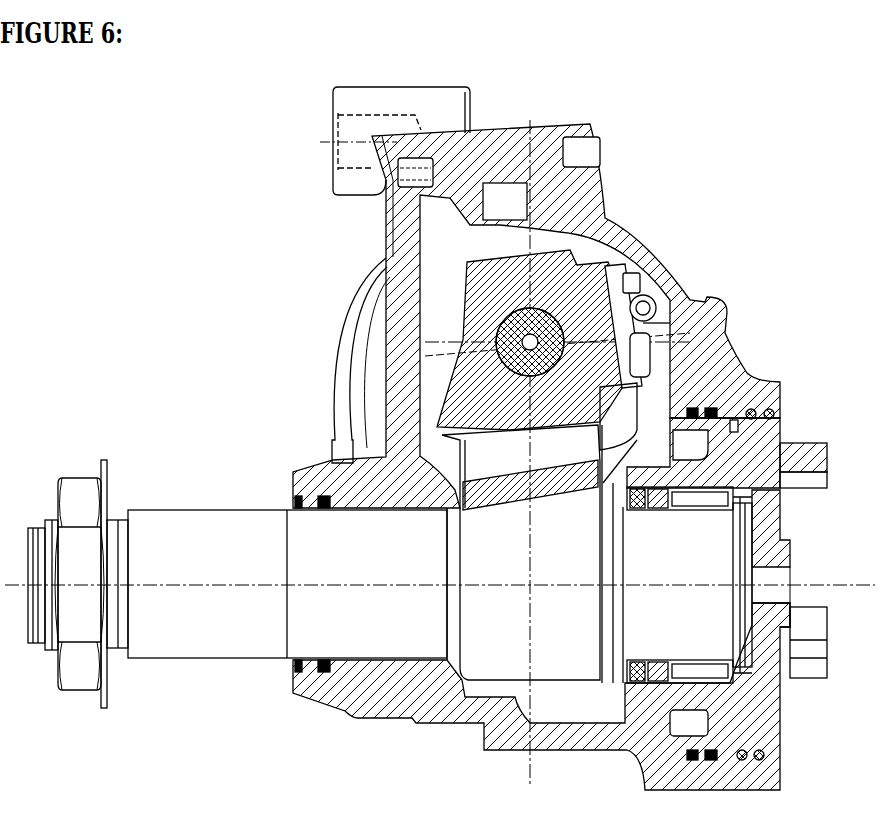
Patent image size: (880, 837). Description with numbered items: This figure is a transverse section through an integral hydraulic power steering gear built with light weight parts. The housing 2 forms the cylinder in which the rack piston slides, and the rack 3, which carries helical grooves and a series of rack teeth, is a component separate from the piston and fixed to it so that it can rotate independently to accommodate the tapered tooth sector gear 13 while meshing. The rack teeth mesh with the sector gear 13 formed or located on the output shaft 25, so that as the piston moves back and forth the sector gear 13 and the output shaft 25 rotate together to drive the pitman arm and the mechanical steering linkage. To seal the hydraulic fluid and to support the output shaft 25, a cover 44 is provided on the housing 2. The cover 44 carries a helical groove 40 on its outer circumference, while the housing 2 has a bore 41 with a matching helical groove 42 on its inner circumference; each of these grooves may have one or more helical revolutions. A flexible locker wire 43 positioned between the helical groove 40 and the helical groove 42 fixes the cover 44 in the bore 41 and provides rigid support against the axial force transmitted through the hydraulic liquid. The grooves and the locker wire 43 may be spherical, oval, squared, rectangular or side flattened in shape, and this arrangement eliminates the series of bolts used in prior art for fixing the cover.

The housing 2 is at (626, 224).
The rack 3 is at (470, 290).
The sector gear 13 is at (592, 444).
The output shaft 25 is at (557, 666).
The helical groove 40 is at (772, 414).
The bore 41 is at (776, 750).
The helical groove 42 is at (716, 412).
The locker wire 43 is at (762, 753).
The cover 44 is at (770, 534).